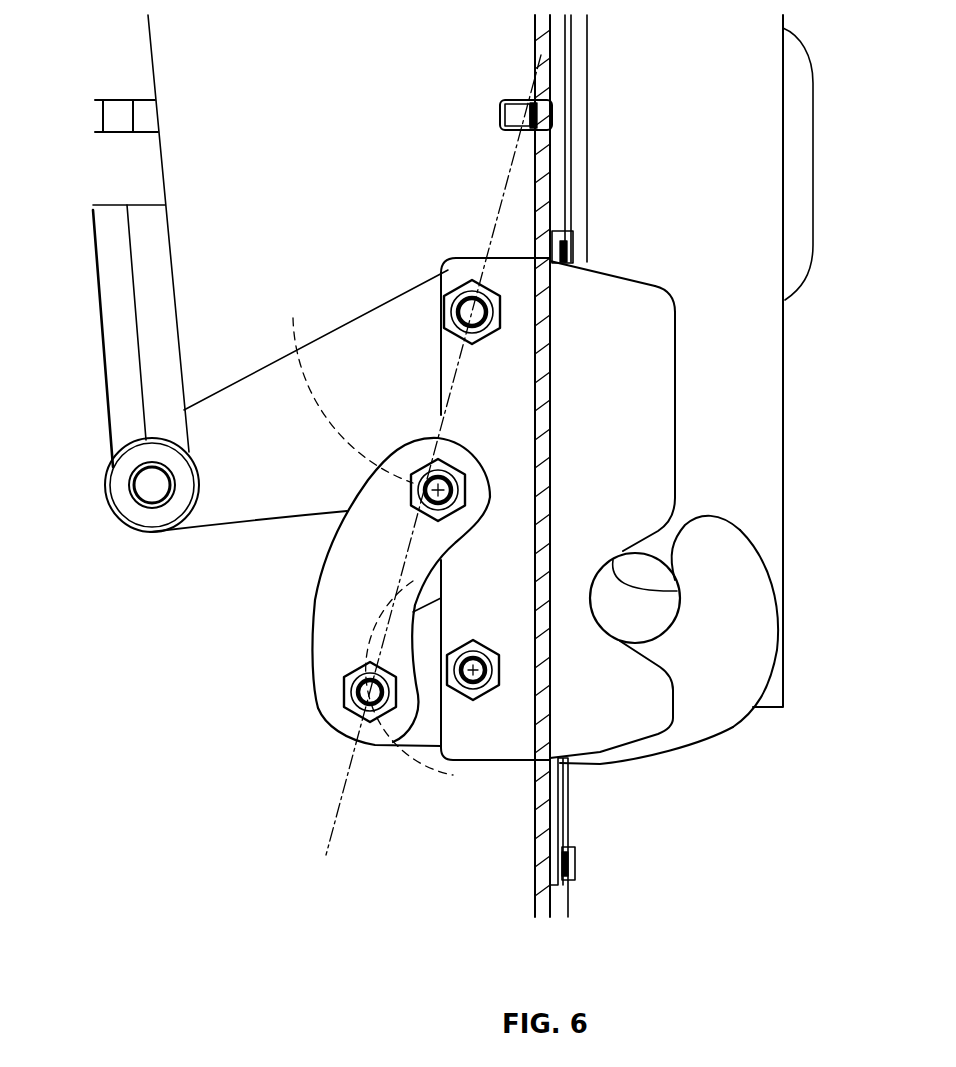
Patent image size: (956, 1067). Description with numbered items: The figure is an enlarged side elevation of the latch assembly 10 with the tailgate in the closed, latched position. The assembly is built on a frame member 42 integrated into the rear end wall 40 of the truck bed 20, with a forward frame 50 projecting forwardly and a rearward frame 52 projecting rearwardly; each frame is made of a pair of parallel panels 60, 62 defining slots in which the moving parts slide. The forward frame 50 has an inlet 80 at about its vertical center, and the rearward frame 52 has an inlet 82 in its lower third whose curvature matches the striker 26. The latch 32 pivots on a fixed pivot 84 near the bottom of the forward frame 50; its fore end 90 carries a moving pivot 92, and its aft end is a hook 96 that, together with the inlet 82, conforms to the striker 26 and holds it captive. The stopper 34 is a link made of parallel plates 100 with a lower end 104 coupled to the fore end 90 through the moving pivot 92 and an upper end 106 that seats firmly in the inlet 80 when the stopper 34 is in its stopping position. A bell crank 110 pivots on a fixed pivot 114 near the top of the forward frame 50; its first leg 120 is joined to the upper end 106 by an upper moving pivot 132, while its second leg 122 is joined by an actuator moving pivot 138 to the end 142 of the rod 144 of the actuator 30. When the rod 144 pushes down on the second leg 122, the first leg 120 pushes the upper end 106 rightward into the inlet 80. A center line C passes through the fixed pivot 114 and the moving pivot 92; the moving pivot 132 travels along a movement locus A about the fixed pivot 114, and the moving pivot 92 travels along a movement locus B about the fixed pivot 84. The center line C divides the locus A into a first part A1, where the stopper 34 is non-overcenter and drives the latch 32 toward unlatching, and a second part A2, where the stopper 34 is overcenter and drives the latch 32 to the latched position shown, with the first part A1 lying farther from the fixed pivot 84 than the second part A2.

The latch assembly 10 is at (314, 116).
The truck bed 20 is at (556, 307).
The striker 26 is at (655, 617).
The actuator 30 is at (104, 284).
The latch 32 is at (727, 704).
The stopper 34 is at (323, 615).
The rear end wall 40 is at (551, 345).
The frame member 42 is at (680, 416).
The forward frame 50 is at (510, 258).
The rearward frame 52 is at (607, 271).
The parallel panels 60 is at (460, 258).
The parallel panels 62 is at (645, 285).
The inlet 80 is at (490, 481).
The inlet 82 is at (660, 592).
The fixed pivot 84 is at (473, 672).
The fore end 90 is at (378, 745).
The moving pivot 92 is at (358, 700).
The hook 96 is at (710, 551).
The parallel plates 100 is at (312, 655).
The lower end 104 is at (328, 697).
The upper end 106 is at (481, 488).
The bell crank 110 is at (247, 452).
The fixed pivot 114 is at (470, 312).
The first leg 120 is at (330, 458).
The second leg 122 is at (113, 510).
The upper moving pivot 132 is at (438, 490).
The actuator moving pivot 138 is at (145, 487).
The end of rod 142 is at (193, 482).
The rod 144 is at (160, 268).
The movement locus A is at (292, 323).
The first part of movement locus A1 is at (442, 415).
The second part of movement locus A2 is at (442, 415).
The movement locus B is at (418, 767).
The center line C is at (510, 176).